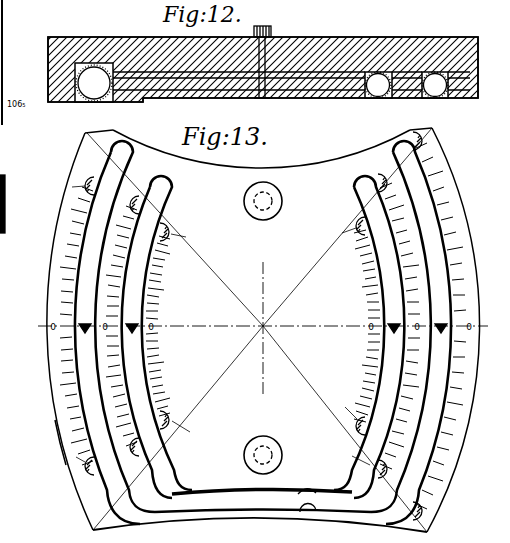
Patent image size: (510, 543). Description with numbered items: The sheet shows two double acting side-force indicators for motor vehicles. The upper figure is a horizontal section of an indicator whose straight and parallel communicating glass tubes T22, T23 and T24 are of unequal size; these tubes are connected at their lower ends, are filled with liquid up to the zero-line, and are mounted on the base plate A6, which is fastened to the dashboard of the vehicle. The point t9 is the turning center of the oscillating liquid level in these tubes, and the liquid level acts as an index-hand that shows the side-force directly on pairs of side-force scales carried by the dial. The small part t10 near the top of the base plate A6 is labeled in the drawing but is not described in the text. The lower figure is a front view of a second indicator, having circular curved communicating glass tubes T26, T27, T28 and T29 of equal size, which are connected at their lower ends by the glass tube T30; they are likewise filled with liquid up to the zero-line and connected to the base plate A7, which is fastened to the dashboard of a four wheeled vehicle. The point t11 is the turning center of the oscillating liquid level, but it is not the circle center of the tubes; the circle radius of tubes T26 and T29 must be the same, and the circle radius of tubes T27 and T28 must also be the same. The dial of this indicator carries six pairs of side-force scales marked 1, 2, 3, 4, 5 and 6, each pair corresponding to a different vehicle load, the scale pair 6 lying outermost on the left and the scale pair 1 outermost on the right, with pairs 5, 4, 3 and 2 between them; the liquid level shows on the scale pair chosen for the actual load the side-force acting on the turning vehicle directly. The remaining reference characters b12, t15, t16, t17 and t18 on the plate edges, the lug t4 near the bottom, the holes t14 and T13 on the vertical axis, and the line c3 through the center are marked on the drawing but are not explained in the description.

In FIG. 12, the communicating glass tube T22 is at (90, 92).
In FIG. 12, the communicating glass tube T23 is at (373, 93).
In FIG. 12, the communicating glass tube T24 is at (437, 94).
In FIG. 12, the base plate A6 is at (372, 58).
In FIG. 12, the clamping nut t10 is at (267, 31).
In FIG. 12, the turning center t9 is at (258, 99).
In FIG. 13, the base plate A7 is at (285, 167).
In FIG. 13, the plate corner b12 is at (100, 139).
In FIG. 13, the plate edge t15 is at (478, 327).
In FIG. 13, the plate edge t16 is at (46, 327).
In FIG. 13, the plate edge t17 is at (58, 446).
In FIG. 13, the plate edge t18 is at (260, 524).
In FIG. 13, the circular curved communicating glass tube T26 is at (134, 156).
In FIG. 13, the circular curved communicating glass tube T27 is at (173, 184).
In FIG. 13, the circular curved communicating glass tube T28 is at (353, 186).
In FIG. 13, the circular curved communicating glass tube T29 is at (393, 150).
In FIG. 13, the connecting glass tube T30 is at (222, 477).
In FIG. 13, the stop lug t4 is at (306, 497).
In FIG. 13, the pivot hole t14 is at (282, 202).
In FIG. 13, the pivot hole T13 is at (277, 468).
In FIG. 13, the center line c3 is at (271, 325).
In FIG. 13, the turning center t11 is at (263, 330).
In FIG. 13, the side-force scale pair 1 is at (433, 326).
In FIG. 13, the side-force scale pair 2 is at (362, 321).
In FIG. 13, the side-force scale pair 3 is at (340, 319).
In FIG. 13, the side-force scale pair 4 is at (184, 323).
In FIG. 13, the side-force scale pair 5 is at (120, 322).
In FIG. 13, the side-force scale pair 6 is at (63, 320).